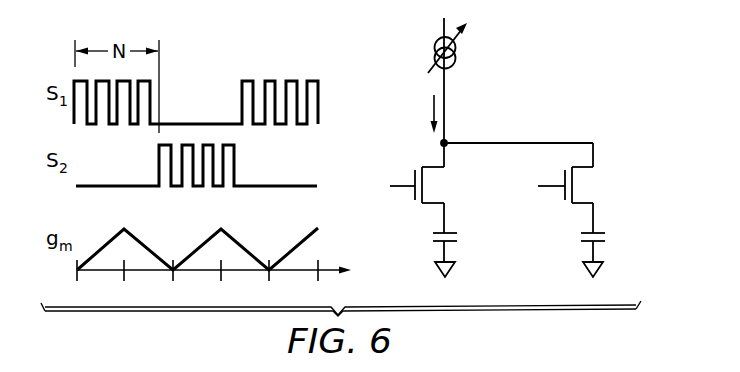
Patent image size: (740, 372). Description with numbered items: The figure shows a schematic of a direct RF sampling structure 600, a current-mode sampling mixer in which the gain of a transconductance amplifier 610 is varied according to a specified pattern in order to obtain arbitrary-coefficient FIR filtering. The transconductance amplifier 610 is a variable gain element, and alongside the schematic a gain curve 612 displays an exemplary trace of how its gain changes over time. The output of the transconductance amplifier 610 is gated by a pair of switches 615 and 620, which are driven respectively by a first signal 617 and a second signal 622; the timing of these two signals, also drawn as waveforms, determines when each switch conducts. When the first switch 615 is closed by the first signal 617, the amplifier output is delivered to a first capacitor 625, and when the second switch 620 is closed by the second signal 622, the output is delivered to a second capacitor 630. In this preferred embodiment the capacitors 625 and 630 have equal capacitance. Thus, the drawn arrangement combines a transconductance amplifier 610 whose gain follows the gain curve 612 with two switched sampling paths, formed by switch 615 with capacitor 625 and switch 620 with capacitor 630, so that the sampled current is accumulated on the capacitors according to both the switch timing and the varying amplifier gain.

The direct RF sampling structure 600 is at (516, 147).
The variable gain transconductance amplifier 610 is at (432, 46).
The gain curve 612 is at (195, 249).
The switch 615 is at (416, 198).
The signal S1 617 is at (246, 80).
The switch 620 is at (564, 198).
The signal S2 622 is at (236, 162).
The capacitor 625 is at (432, 240).
The capacitor 630 is at (580, 240).